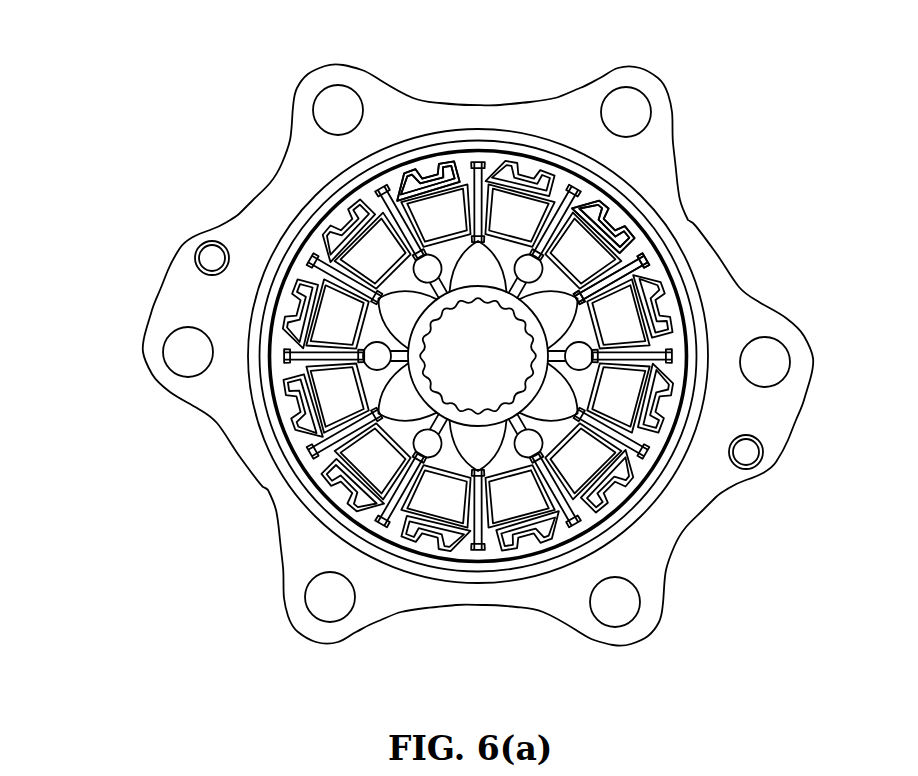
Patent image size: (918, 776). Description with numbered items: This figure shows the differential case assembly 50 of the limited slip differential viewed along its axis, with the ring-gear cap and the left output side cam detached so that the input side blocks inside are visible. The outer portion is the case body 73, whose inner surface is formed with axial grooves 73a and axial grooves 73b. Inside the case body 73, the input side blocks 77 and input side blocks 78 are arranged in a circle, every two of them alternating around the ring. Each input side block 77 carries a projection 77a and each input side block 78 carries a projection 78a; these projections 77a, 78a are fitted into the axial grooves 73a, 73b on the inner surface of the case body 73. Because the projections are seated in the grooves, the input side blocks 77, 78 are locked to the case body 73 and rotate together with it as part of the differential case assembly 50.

The differential case assembly 50 is at (262, 187).
The case body 73 is at (196, 409).
The axial groove 73a is at (462, 192).
The axial groove 73b is at (620, 266).
The input side block 77 is at (480, 178).
The projection 77a is at (440, 170).
The input side block 78 is at (343, 256).
The projection 78a is at (600, 207).